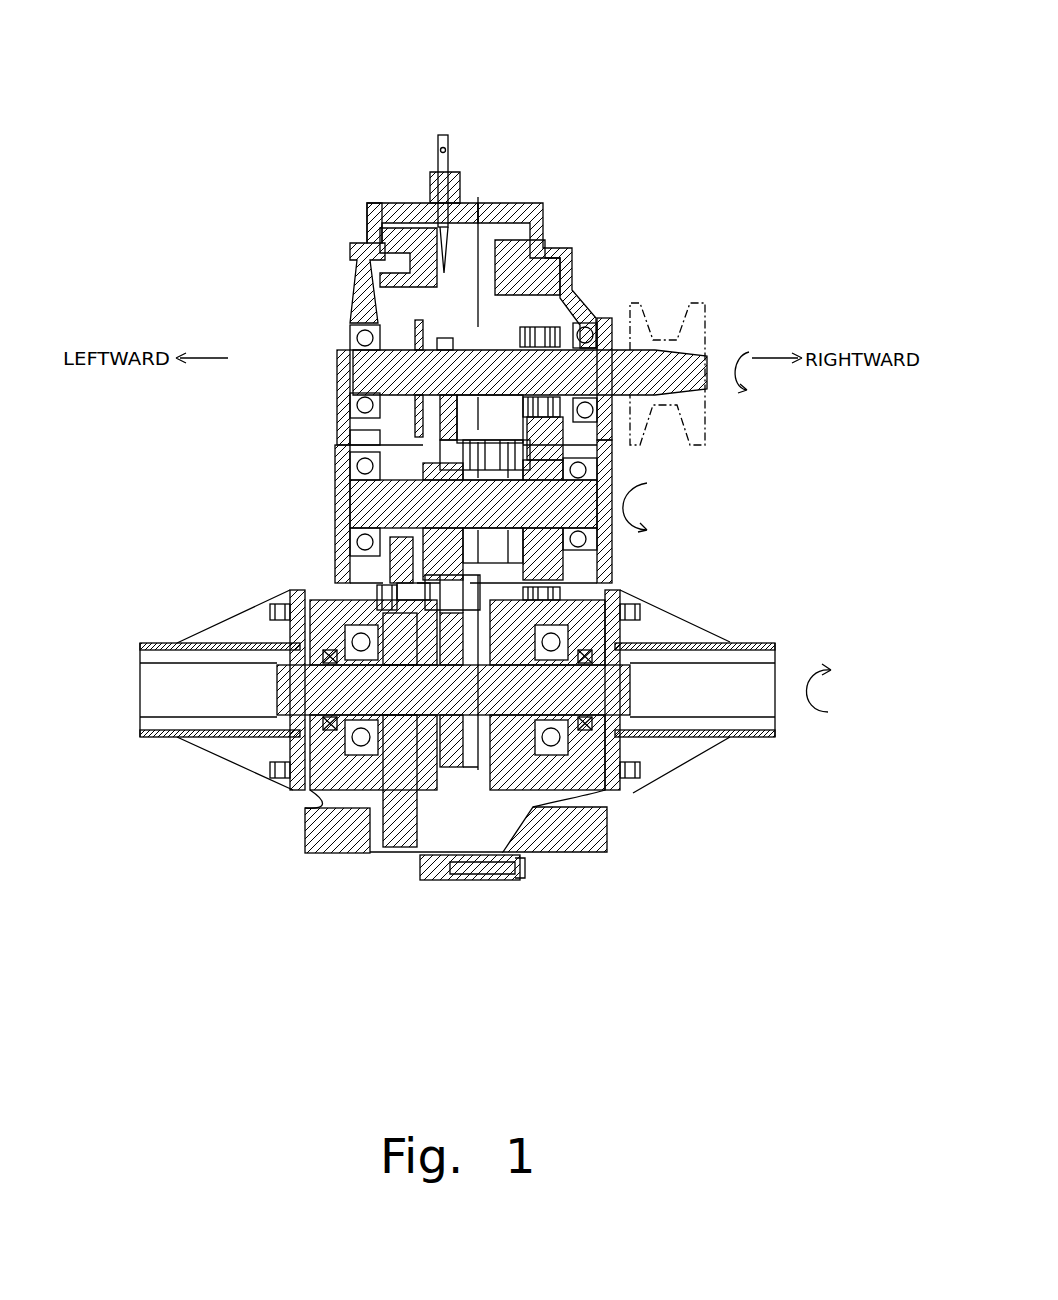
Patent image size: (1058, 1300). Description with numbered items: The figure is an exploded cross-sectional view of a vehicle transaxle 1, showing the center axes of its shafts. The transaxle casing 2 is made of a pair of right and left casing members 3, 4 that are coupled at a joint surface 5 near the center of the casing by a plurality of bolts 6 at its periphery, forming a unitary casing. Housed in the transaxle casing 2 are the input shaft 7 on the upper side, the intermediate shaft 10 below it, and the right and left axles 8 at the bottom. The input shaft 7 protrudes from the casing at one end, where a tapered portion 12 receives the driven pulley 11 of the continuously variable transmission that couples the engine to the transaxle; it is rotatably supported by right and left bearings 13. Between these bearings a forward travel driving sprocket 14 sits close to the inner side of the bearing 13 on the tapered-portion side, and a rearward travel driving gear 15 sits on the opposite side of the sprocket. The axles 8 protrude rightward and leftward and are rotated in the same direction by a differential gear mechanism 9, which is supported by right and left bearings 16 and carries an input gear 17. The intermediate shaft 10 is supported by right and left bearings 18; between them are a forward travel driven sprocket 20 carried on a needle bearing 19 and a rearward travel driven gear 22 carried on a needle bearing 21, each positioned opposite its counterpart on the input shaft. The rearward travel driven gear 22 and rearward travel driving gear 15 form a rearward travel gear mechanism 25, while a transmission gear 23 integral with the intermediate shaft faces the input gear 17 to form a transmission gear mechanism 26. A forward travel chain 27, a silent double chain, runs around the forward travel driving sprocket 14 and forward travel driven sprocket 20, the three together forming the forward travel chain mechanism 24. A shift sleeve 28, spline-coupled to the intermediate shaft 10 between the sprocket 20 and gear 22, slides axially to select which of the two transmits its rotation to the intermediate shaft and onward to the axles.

The transaxle 1 is at (297, 134).
The transaxle casing 2 is at (504, 58).
The casing member 3 is at (397, 205).
The casing member 4 is at (517, 205).
The joint surface 5 is at (480, 232).
The bolt 6 is at (530, 872).
The input shaft 7 is at (400, 335).
The axle 8 is at (173, 695).
The differential gear mechanism 9 is at (476, 773).
The intermediate shaft 10 is at (333, 515).
The driven pulley 11 is at (706, 297).
The tapered portion 12 is at (708, 352).
The bearing 13 is at (600, 314).
The forward travel driving sprocket 14 is at (588, 300).
The rearward travel driving gear 15 is at (500, 245).
The bearing 16 is at (307, 817).
The input gear 17 is at (400, 847).
The bearing 18 is at (333, 535).
The needle bearing 19 is at (600, 485).
The forward travel driven sprocket 20 is at (600, 466).
The needle bearing 21 is at (333, 500).
The rearward travel driven gear 22 is at (342, 457).
The transmission gear 23 is at (333, 487).
The forward travel chain mechanism 24 is at (504, 414).
The rearward travel gear mechanism 25 is at (358, 436).
The transmission gear mechanism 26 is at (372, 592).
The forward travel chain 27 is at (600, 588).
The shift sleeve 28 is at (615, 608).